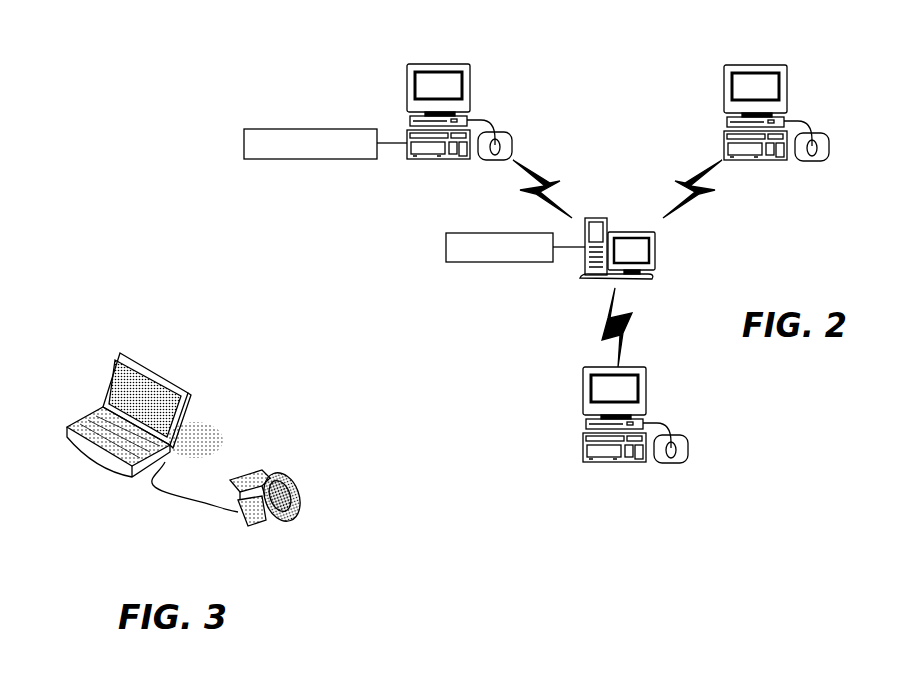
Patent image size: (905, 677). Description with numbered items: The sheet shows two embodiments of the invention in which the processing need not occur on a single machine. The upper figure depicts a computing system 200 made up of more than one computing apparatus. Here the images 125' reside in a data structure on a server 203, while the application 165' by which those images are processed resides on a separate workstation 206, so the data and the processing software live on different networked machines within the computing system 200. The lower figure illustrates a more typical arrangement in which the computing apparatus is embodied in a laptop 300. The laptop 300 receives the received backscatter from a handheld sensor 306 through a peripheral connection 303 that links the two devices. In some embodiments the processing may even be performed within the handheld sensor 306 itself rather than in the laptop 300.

In FIG. 2, the computing system 200 is at (762, 36).
In FIG. 2, the application 165' is at (310, 121).
In FIG. 2, the images 125' is at (470, 233).
In FIG. 2, the workstation 206 is at (474, 113).
In FIG. 2, the server 203 is at (657, 247).
In FIG. 3, the laptop 300 is at (188, 393).
In FIG. 3, the peripheral connection 303 is at (167, 487).
In FIG. 3, the handheld sensor 306 is at (245, 522).